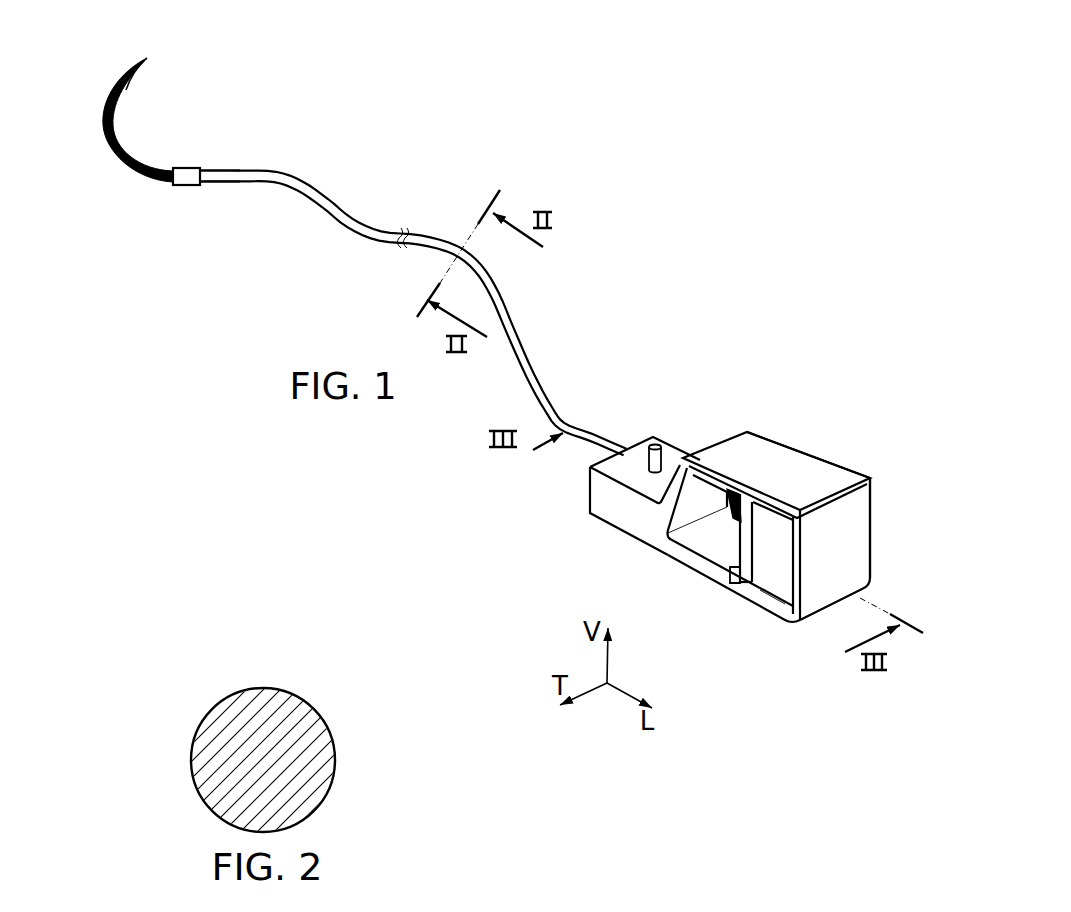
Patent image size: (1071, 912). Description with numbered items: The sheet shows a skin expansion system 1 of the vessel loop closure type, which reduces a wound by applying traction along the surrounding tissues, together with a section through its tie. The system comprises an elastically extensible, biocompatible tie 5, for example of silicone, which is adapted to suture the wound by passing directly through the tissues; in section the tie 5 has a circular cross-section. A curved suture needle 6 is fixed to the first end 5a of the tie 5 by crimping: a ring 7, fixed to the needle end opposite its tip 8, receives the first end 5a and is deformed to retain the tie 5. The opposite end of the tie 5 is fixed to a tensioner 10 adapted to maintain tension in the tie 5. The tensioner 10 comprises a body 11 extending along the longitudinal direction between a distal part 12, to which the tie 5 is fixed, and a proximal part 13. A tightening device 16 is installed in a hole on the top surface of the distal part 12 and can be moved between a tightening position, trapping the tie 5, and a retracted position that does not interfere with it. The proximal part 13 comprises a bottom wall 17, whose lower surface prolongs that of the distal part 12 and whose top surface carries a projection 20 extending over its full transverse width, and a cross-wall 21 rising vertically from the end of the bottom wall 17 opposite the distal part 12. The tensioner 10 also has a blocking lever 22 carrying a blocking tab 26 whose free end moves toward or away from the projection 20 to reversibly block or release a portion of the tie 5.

In FIG. 1, the skin expansion system 1 is at (645, 130).
In FIG. 1, the tie 5 is at (513, 325).
In FIG. 2, the tie 5 is at (242, 685).
In FIG. 1, the first end 5a is at (200, 168).
In FIG. 1, the suture needle 6 is at (103, 72).
In FIG. 1, the ring 7 is at (188, 185).
In FIG. 1, the tip 8 is at (135, 64).
In FIG. 1, the tensioner 10 is at (803, 427).
In FIG. 1, the body 11 is at (697, 602).
In FIG. 1, the distal part 12 is at (607, 527).
In FIG. 1, the proximal part 13 is at (747, 612).
In FIG. 1, the tightening device 16 is at (657, 440).
In FIG. 1, the bottom wall 17 is at (732, 593).
In FIG. 1, the projection 20 is at (740, 568).
In FIG. 1, the cross-wall 21 is at (847, 527).
In FIG. 1, the blocking lever 22 is at (820, 450).
In FIG. 1, the blocking tab 26 is at (763, 562).